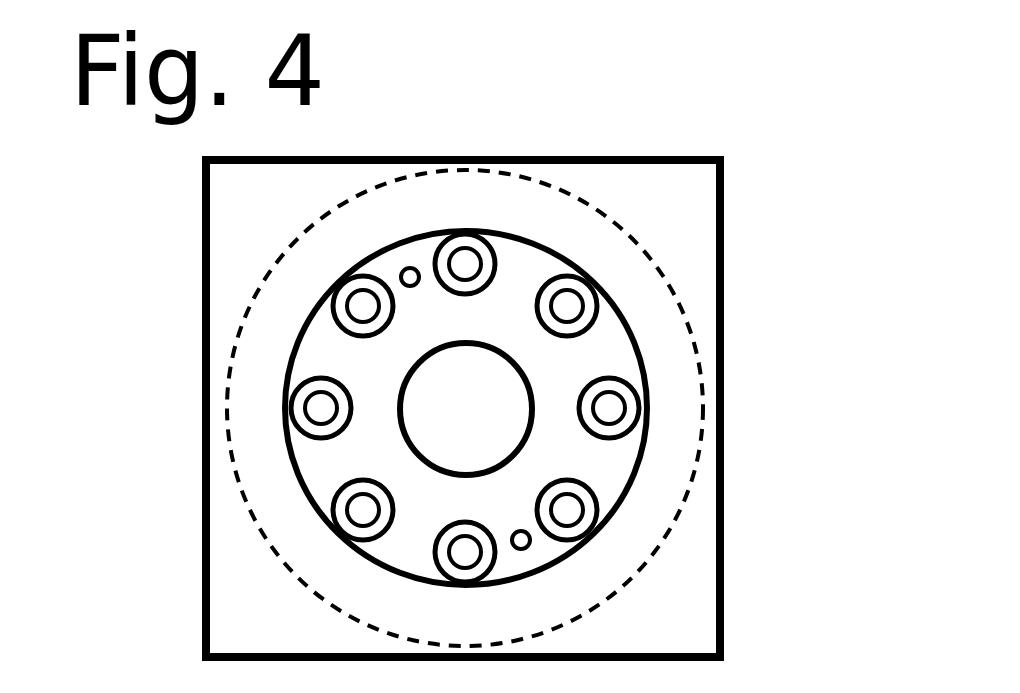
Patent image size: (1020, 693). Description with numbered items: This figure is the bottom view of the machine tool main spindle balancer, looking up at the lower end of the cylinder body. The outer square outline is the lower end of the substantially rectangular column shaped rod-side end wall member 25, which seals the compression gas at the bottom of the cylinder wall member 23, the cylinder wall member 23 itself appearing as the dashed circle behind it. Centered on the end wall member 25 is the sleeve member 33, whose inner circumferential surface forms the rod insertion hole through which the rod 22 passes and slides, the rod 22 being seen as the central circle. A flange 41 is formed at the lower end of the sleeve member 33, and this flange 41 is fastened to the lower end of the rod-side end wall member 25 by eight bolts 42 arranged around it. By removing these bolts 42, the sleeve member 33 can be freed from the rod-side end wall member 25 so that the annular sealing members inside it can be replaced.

The rod 22 is at (400, 382).
The cylinder wall member 23 is at (698, 366).
The rod-side end wall member 25 is at (720, 568).
The sleeve member 33 is at (465, 231).
The flange 41 is at (543, 268).
The bolts 42 is at (330, 516).